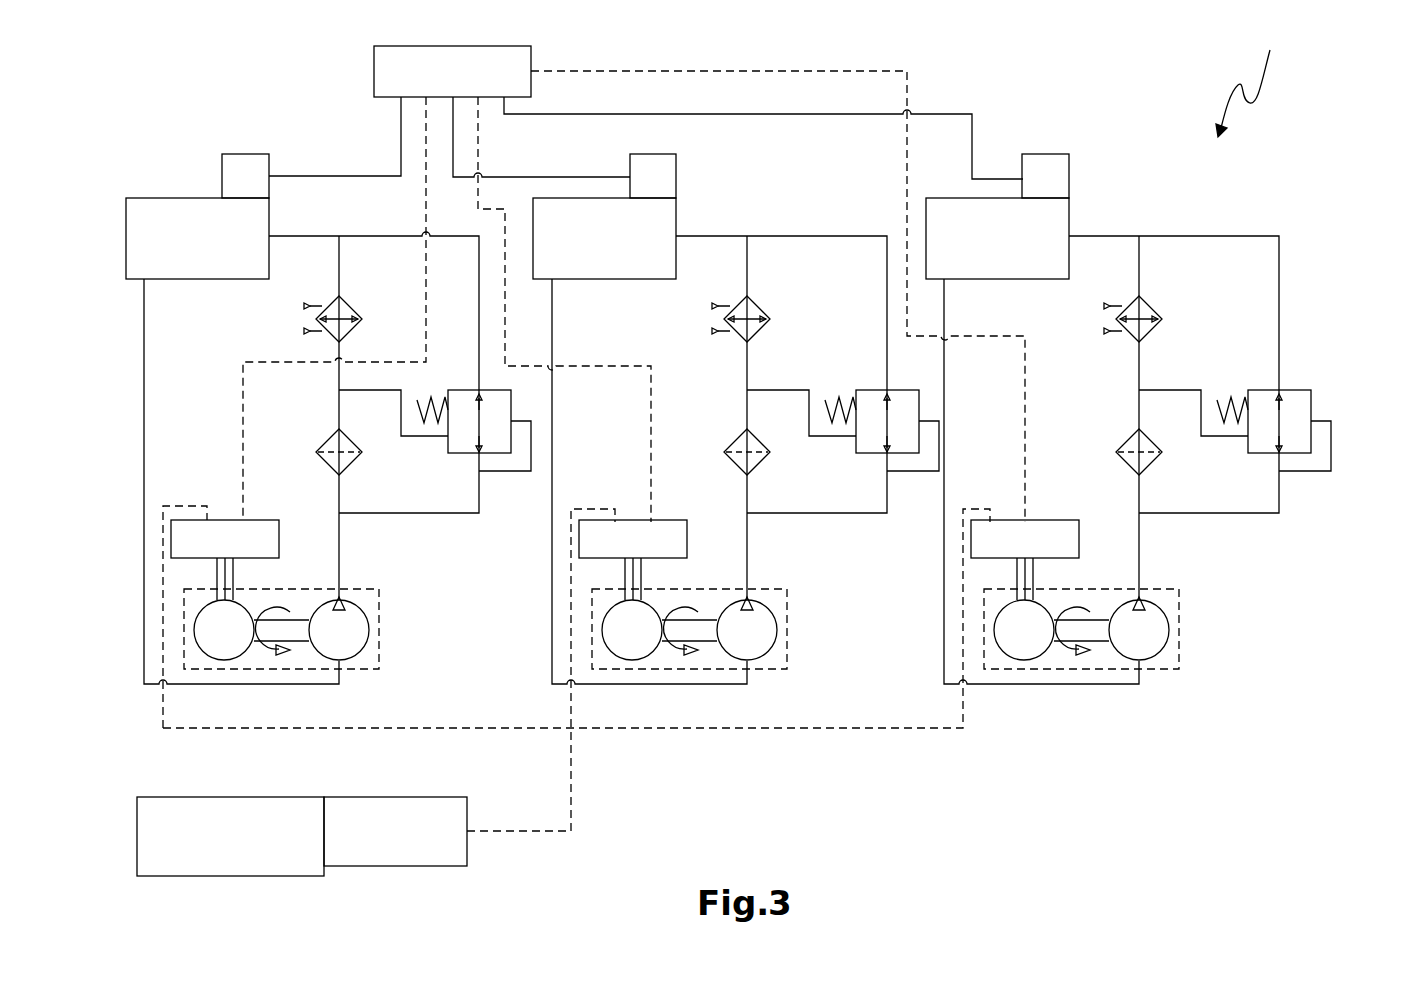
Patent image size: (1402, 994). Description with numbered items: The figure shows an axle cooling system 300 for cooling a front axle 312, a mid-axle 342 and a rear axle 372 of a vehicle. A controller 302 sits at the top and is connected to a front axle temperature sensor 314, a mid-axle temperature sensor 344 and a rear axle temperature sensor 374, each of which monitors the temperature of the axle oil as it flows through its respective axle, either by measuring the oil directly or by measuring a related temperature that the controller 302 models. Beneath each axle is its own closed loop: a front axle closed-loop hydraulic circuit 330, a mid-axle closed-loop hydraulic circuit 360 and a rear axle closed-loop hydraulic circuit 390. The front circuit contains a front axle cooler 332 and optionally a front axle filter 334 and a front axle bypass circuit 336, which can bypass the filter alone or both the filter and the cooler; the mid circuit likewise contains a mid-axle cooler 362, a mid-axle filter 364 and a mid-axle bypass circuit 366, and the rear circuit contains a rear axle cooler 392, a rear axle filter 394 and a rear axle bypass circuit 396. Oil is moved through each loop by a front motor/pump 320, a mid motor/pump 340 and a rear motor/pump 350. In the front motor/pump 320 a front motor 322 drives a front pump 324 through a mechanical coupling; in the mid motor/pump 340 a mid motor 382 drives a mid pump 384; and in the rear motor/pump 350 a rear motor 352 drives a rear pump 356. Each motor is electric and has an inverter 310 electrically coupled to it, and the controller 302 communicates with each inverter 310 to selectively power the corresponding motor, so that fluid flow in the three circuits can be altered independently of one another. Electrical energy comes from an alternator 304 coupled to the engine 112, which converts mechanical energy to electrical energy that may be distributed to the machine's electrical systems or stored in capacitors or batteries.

The axle cooling system 300 is at (1256, 77).
The controller 302 is at (374, 58).
The alternator 304 is at (400, 866).
The engine 112 is at (229, 876).
The inverter 310 is at (220, 520).
The front axle 312 is at (168, 198).
The front axle temperature sensor 314 is at (232, 154).
The front motor/pump 320 is at (347, 642).
The front motor 322 is at (224, 661).
The front pump 324 is at (348, 655).
The front axle closed-loop hydraulic circuit 330 is at (339, 548).
The front axle cooler 332 is at (350, 307).
The front axle filter 334 is at (323, 440).
The front axle bypass circuit 336 is at (462, 453).
The mid motor/pump 340 is at (754, 673).
The mid-axle 342 is at (676, 222).
The mid-axle temperature sensor 344 is at (676, 177).
The rear motor/pump 350 is at (1146, 667).
The rear motor 352 is at (1025, 661).
The rear pump 356 is at (1160, 655).
The mid-axle closed-loop hydraulic circuit 360 is at (747, 548).
The mid-axle cooler 362 is at (765, 300).
The mid-axle filter 364 is at (733, 443).
The mid-axle bypass circuit 366 is at (873, 390).
The rear axle 372 is at (1069, 222).
The rear axle temperature sensor 374 is at (1047, 154).
The mid motor 382 is at (630, 661).
The mid pump 384 is at (765, 656).
The rear axle closed-loop hydraulic circuit 390 is at (1139, 548).
The rear axle cooler 392 is at (1157, 300).
The rear axle filter 394 is at (1125, 443).
The rear axle bypass circuit 396 is at (1297, 390).